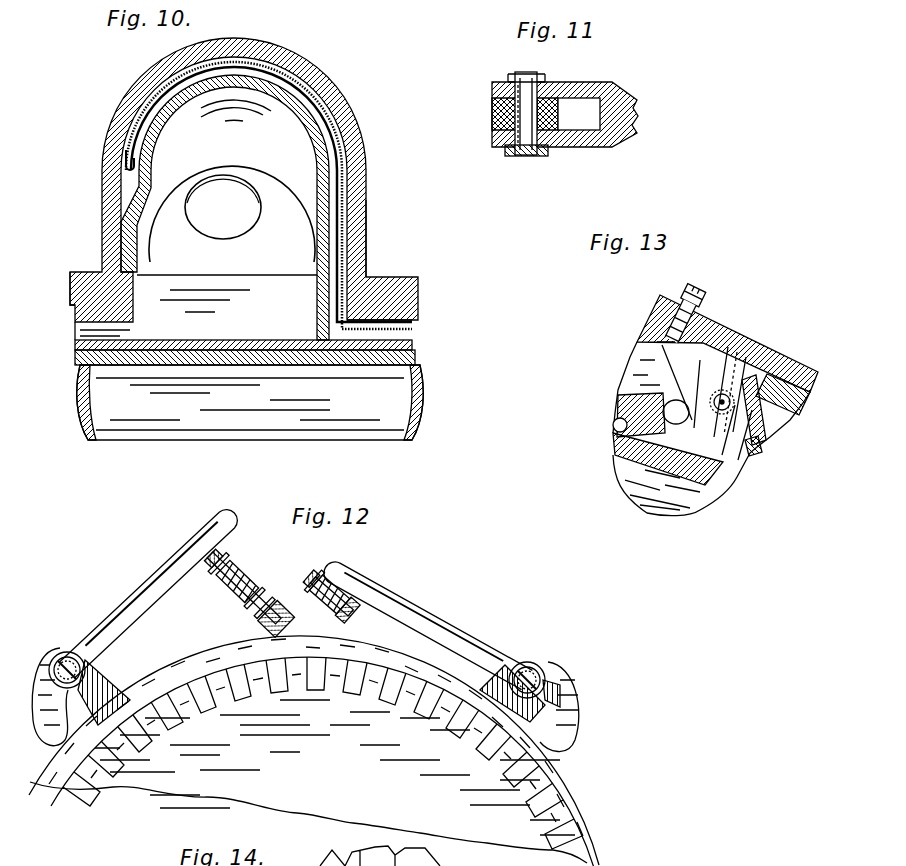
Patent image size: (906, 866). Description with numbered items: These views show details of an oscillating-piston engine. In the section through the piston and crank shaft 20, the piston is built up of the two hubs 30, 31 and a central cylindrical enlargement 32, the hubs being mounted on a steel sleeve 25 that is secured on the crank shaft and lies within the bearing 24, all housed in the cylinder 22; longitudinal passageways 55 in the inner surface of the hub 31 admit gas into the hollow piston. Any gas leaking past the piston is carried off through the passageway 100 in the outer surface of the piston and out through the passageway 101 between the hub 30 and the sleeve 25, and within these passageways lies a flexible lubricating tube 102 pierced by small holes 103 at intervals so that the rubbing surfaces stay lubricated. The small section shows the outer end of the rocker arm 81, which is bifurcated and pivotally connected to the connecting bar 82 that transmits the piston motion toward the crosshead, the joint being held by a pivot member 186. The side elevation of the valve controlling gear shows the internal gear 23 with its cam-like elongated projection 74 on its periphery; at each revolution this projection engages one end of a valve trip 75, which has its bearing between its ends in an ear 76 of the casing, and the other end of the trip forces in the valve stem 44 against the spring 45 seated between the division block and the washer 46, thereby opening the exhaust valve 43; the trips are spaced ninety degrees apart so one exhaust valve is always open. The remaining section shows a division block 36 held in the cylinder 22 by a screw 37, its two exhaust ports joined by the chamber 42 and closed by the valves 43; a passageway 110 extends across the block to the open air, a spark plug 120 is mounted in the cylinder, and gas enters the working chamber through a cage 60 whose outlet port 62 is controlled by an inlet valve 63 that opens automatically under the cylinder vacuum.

In FIG. 10, the base 20 is at (418, 420).
In FIG. 10, the cylinder 22 is at (366, 253).
In FIG. 13, the cylinder 22 is at (820, 338).
In FIG. 12, the internal gear 23 is at (308, 760).
In FIG. 10, the bearing 24 is at (102, 362).
In FIG. 10, the steel sleeve 25 is at (287, 352).
In FIG. 10, the hub 30 is at (412, 322).
In FIG. 10, the hub 31 is at (73, 307).
In FIG. 13, the cylindrical enlargement 32 is at (628, 455).
In FIG. 13, the division block 36 is at (647, 322).
In FIG. 13, the screw 37 is at (725, 273).
In FIG. 13, the chamber 42 is at (639, 398).
In FIG. 13, the valve 43 is at (678, 387).
In FIG. 12, the stem 44 is at (273, 587).
In FIG. 12, the spring 45 is at (253, 600).
In FIG. 12, the washer 46 is at (225, 550).
In FIG. 10, the passageway 55 is at (73, 330).
In FIG. 13, the cage 60 is at (717, 455).
In FIG. 13, the outlet port 62 is at (711, 422).
In FIG. 13, the valve 63 is at (753, 443).
In FIG. 12, the cam-like elongated projection 74 is at (587, 777).
In FIG. 12, the valve trip 75 is at (153, 583).
In FIG. 12, the ear 76 is at (110, 685).
In FIG. 11, the rocker arm 81 is at (615, 90).
In FIG. 11, the connecting bar 82 is at (492, 108).
In FIG. 10, the passageway 100 is at (368, 226).
In FIG. 10, the passageway 101 is at (408, 330).
In FIG. 10, the lubricating tube 102 is at (358, 178).
In FIG. 10, the small holes 103 is at (332, 145).
In FIG. 13, the passageway 110 is at (617, 432).
In FIG. 13, the spark plug 120 is at (732, 387).
In FIG. 11, the retainer 186 is at (535, 156).